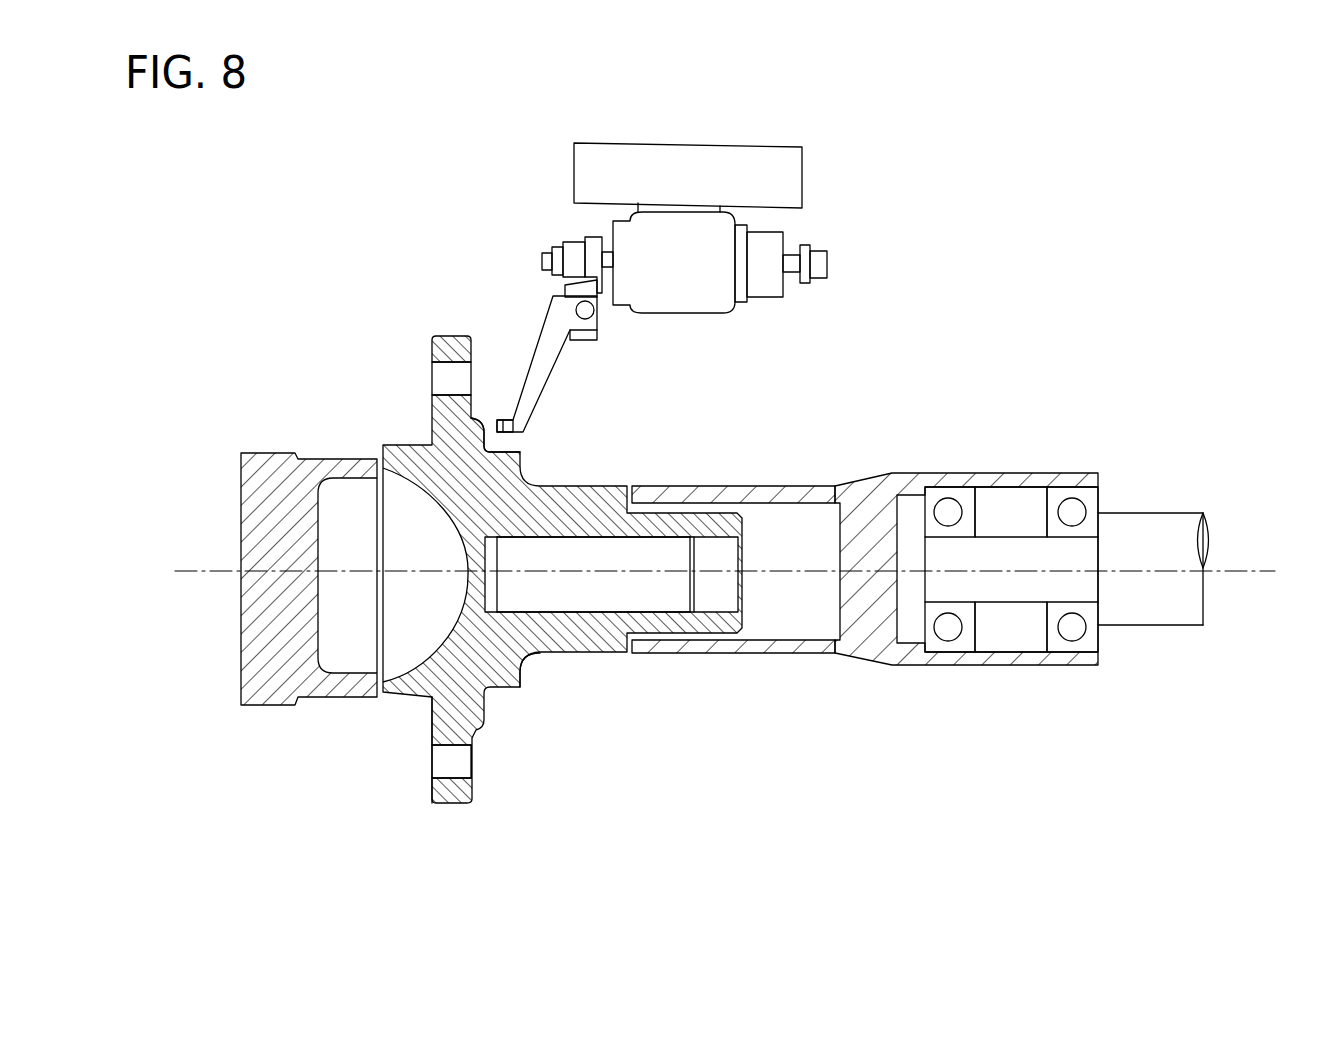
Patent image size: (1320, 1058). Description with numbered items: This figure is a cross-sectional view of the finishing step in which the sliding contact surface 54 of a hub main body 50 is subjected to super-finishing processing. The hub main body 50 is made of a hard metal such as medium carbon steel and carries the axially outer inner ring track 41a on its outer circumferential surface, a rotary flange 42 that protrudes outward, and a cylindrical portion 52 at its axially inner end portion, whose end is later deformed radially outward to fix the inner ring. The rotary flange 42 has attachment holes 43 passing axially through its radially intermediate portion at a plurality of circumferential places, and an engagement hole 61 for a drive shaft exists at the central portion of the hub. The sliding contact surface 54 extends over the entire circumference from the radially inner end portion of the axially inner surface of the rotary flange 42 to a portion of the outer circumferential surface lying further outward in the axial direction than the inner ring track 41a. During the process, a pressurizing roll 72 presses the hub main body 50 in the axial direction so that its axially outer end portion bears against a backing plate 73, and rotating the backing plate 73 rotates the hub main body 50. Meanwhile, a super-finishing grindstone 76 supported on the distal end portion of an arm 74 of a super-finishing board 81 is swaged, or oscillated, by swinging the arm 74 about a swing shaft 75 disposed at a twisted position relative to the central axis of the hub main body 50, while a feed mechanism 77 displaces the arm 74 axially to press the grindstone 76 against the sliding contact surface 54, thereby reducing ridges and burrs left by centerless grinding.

The super-finishing board 81 is at (633, 278).
The swing shaft 75 is at (570, 292).
The super-finishing grindstone 76 is at (497, 420).
The arm 74 is at (547, 358).
The feed mechanism 77 is at (705, 285).
The attachment holes 43 is at (432, 365).
The sliding contact surface 54 is at (482, 444).
The pressurizing roll 72 is at (865, 567).
The backing plate 73 is at (245, 660).
The rotary flange 42 is at (453, 803).
The inner ring track 41a is at (537, 655).
The hub main body 50 is at (575, 645).
The engagement hole 61 is at (617, 603).
The cylindrical portion 52 is at (710, 625).